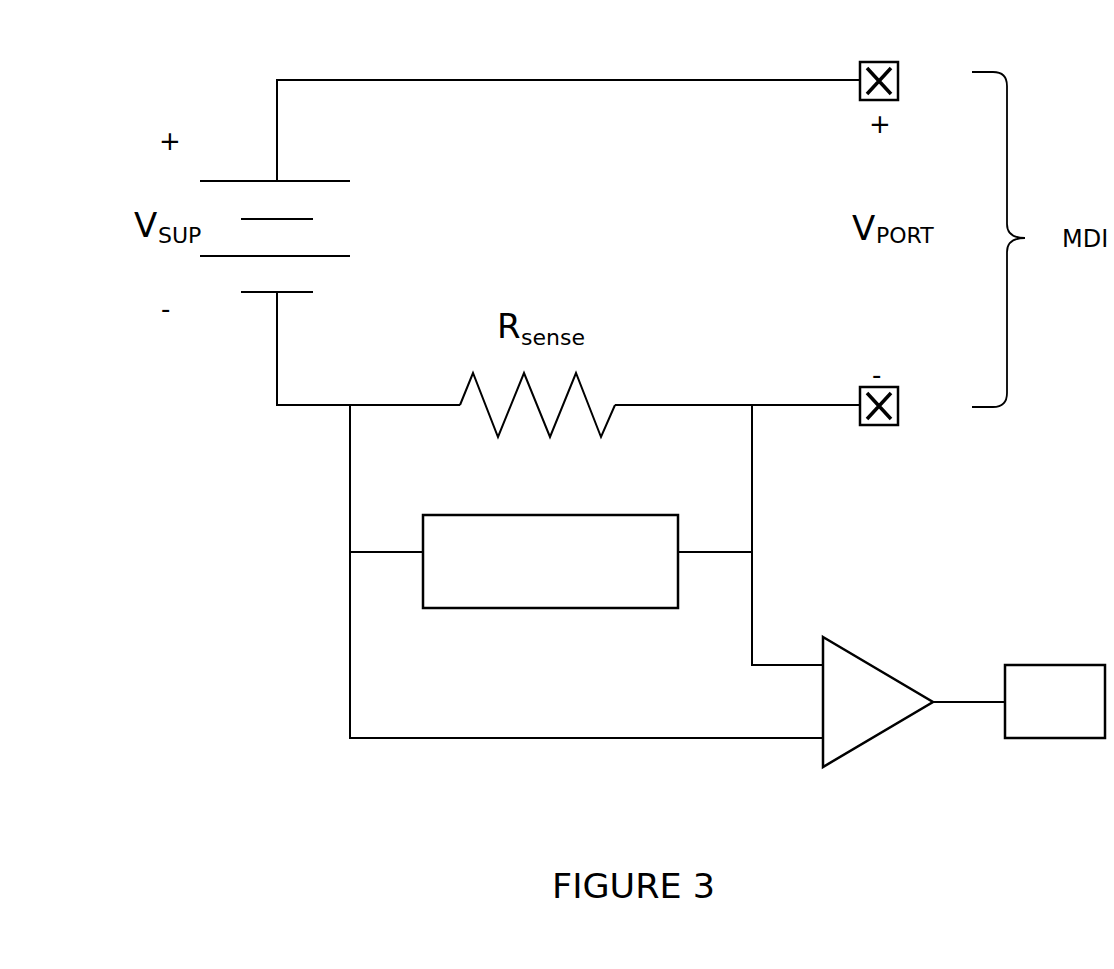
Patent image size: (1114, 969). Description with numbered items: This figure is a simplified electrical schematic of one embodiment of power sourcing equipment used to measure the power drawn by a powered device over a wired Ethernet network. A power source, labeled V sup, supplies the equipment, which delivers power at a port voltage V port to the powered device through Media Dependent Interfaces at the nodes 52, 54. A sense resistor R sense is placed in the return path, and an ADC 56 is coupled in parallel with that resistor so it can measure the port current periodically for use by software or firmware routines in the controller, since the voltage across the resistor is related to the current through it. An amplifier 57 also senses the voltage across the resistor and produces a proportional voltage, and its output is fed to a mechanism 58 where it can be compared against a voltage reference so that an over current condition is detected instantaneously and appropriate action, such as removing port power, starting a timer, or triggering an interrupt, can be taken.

The node 52 is at (878, 62).
The node 54 is at (899, 406).
The ADC 56 is at (602, 515).
The amplifier 57 is at (848, 648).
The mechanism 58 is at (1055, 701).